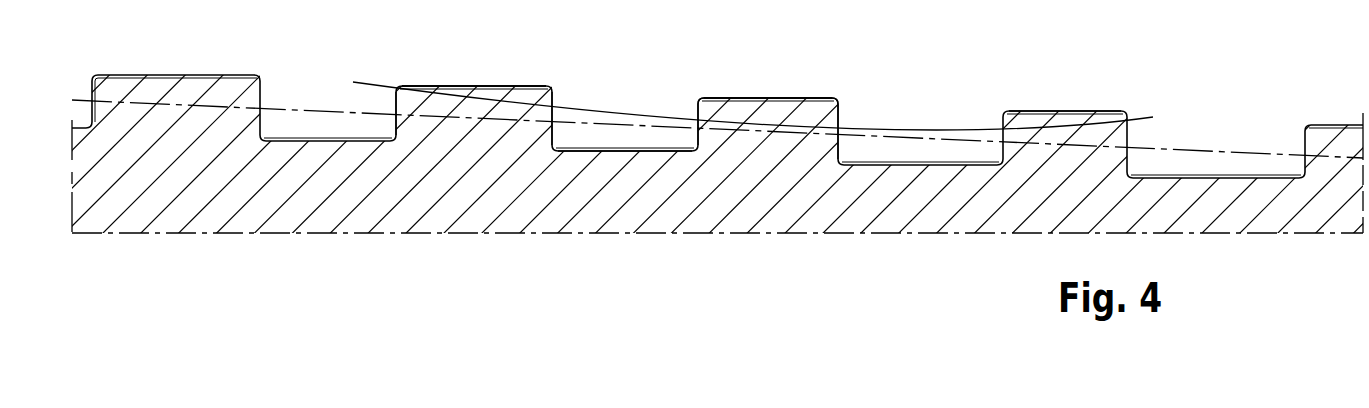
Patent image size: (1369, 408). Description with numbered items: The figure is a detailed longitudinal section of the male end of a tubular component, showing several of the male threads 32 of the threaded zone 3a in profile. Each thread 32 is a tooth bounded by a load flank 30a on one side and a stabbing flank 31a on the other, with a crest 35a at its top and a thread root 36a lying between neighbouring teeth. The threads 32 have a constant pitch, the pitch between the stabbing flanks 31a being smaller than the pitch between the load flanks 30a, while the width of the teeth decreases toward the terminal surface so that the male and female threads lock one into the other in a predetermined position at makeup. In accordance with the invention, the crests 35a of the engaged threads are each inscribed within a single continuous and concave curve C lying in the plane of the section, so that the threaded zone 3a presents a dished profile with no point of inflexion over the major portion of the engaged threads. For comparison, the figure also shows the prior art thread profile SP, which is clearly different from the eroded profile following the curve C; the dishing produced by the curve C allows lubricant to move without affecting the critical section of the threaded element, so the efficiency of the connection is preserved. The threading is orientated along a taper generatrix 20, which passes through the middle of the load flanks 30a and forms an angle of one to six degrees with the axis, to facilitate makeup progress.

The toothed body section 3a is at (450, 210).
The taper generatrix 20 is at (1187, 152).
The curve C is at (898, 128).
The prior art thread profile SP is at (523, 86).
The thread crest 35a is at (486, 98).
The male load flank 30a is at (397, 122).
The male stabbing flank 31a is at (550, 128).
The tooth root 36a is at (657, 152).
The male thread 32 is at (782, 140).